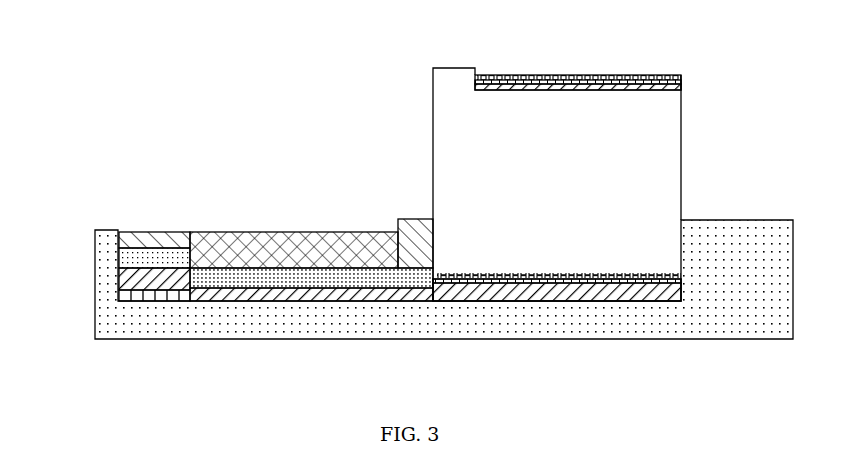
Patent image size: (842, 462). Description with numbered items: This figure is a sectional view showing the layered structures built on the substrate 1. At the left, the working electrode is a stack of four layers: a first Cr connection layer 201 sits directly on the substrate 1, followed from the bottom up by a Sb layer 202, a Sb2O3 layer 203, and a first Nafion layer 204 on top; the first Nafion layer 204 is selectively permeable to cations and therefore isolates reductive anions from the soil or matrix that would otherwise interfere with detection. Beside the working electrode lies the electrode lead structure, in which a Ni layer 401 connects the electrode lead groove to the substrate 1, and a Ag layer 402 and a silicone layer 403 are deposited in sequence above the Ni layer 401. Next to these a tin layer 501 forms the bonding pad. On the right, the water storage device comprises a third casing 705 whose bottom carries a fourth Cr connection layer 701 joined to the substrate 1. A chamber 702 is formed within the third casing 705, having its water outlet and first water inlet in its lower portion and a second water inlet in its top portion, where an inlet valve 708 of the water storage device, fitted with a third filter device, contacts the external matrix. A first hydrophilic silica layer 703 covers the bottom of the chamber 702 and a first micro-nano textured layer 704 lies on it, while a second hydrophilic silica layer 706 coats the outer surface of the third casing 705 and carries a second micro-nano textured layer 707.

The substrate 1 is at (450, 313).
The first Cr connection layer 201 is at (142, 297).
The Sb layer 202 is at (133, 275).
The Sb2O3 layer 203 is at (122, 247).
The first Nafion layer 204 is at (178, 242).
The Ni layer 401 is at (307, 292).
The Ag layer 402 is at (213, 279).
The silicone layer 403 is at (243, 248).
The tin layer 501 is at (413, 250).
The fourth Cr connection layer 701 is at (668, 297).
The chamber 702 is at (667, 180).
The first hydrophilic silica layer 703 is at (597, 285).
The first micro-nano textured layer 704 is at (637, 277).
The third casing 705 is at (672, 78).
The second hydrophilic silica layer 706 is at (603, 78).
The second micro-nano textured layer 707 is at (535, 82).
The inlet valve of the water storage device 708 is at (475, 78).